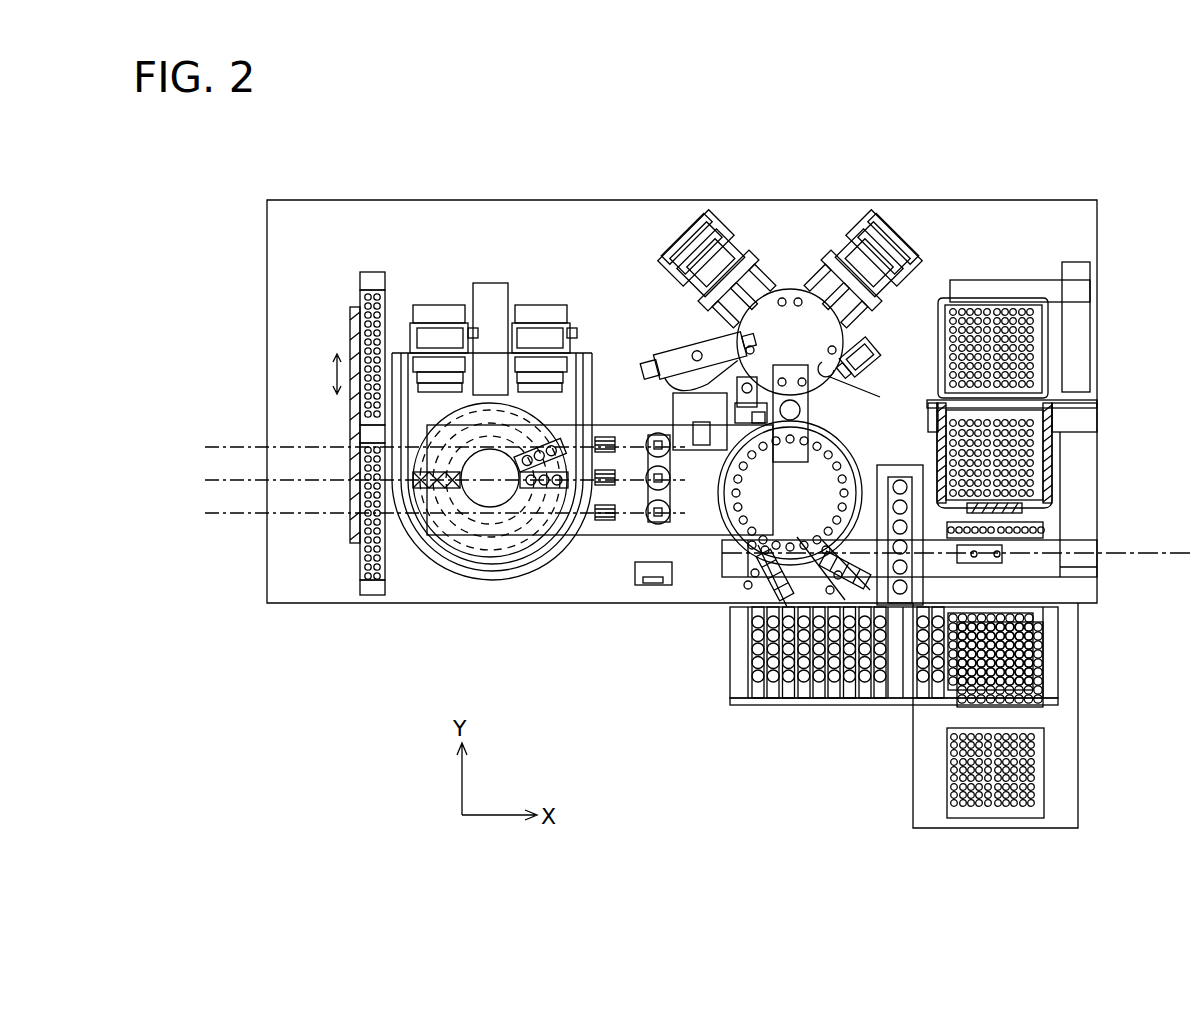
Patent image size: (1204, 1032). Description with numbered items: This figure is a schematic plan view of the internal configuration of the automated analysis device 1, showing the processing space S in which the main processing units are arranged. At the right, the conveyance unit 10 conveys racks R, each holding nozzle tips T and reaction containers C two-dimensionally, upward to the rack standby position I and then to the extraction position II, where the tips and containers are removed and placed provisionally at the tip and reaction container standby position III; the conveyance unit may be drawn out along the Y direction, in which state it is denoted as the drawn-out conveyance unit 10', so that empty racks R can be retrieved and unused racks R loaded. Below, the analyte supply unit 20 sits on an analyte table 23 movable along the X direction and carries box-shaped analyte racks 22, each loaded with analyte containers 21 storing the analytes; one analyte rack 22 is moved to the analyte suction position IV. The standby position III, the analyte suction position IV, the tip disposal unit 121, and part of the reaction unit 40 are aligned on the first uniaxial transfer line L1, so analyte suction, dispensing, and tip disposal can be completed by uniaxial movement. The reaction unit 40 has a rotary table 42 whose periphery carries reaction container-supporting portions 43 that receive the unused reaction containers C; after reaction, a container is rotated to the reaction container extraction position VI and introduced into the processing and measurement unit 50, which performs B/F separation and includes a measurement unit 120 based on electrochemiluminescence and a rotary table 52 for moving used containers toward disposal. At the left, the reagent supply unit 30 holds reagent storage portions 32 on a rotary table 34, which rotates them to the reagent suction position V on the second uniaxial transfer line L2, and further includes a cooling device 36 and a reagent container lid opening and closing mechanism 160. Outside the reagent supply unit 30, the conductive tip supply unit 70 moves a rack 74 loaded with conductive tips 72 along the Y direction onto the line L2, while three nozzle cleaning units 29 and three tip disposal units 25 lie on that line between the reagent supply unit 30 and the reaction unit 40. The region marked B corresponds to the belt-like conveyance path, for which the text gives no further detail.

The automated analysis device 1 is at (425, 698).
The conveyance unit 10 is at (1045, 297).
The conveyance unit (drawn out) 10' is at (1112, 750).
The analyte supply unit 20 is at (832, 702).
The analyte container 21 is at (752, 590).
The analyte rack 22 is at (865, 690).
The analyte table 23 is at (742, 698).
The tip disposal unit 25 is at (656, 434).
The nozzle cleaning unit 29 is at (605, 437).
The reagent supply unit 30 is at (440, 572).
The reagent storage portion 32 is at (450, 473).
The rotary table 34 is at (489, 500).
The cooling device 36 is at (539, 302).
The reaction unit 40 is at (672, 346).
The rotary table 42 is at (745, 512).
The reaction container-supporting portion 43 is at (880, 512).
The processing and measurement unit 50 is at (916, 222).
The rotary table 52 is at (804, 354).
The conductive tip supply unit 70 is at (348, 535).
The conductive tip 72 is at (367, 597).
The rack 74 is at (373, 280).
The measurement unit 120 is at (780, 393).
The tip disposal unit 121 is at (805, 700).
The reagent container lid opening and closing mechanism 160 is at (490, 302).
The belt conveyor B is at (1097, 578).
The reaction container C is at (1043, 347).
The rack R is at (1002, 298).
The nozzle tip T is at (968, 298).
The rack standby position I is at (1055, 366).
The extraction position II is at (1056, 499).
The tip and reaction container standby position III is at (1085, 530).
The analyte suction position IV is at (847, 690).
The reagent suction position V is at (505, 592).
The reaction container extraction position VI is at (720, 240).
The first uniaxial transfer line L1 is at (1172, 553).
The second uniaxial transfer line L2 is at (205, 513).
The processing space S is at (628, 252).